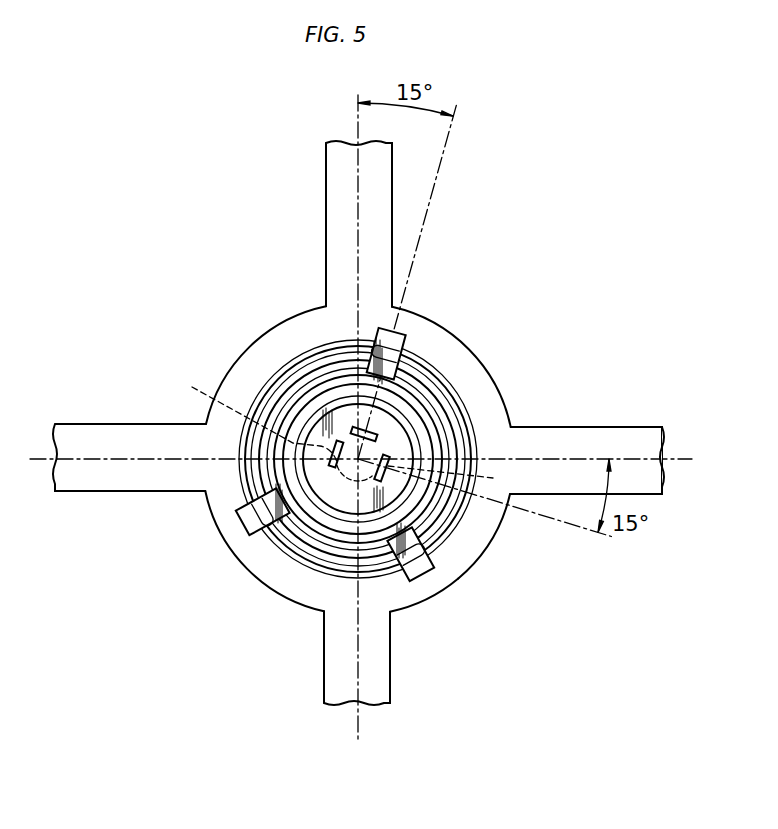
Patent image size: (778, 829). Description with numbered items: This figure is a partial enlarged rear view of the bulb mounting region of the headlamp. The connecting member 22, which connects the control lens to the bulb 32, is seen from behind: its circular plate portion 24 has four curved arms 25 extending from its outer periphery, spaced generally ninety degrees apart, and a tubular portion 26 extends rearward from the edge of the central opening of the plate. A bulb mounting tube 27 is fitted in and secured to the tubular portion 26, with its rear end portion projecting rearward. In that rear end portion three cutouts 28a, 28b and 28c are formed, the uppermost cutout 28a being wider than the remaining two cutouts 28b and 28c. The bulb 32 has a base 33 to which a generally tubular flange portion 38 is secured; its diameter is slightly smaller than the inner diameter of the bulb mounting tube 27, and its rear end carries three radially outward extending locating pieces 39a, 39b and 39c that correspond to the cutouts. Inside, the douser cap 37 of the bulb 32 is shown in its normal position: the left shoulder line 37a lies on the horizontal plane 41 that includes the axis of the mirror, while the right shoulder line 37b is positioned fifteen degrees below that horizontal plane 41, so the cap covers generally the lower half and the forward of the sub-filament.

The connecting member 22 is at (492, 547).
The circular plate portion 24 is at (412, 602).
The curved arms 25 is at (337, 188).
The tubular portion 26 is at (290, 365).
The bulb mounting tube 27 is at (433, 385).
The uppermost cutout 28a is at (407, 340).
The cutout 28b is at (237, 515).
The cutout 28c is at (432, 560).
The bulb 32 is at (470, 403).
The base 33 is at (317, 432).
The douser cap 37 is at (352, 481).
The left shoulder line 37a is at (246, 414).
The right shoulder line 37b is at (462, 479).
The flange portion 38 is at (323, 382).
The locating piece 39a is at (395, 348).
The locating piece 39b is at (256, 515).
The locating piece 39c is at (418, 565).
The horizontal plane 41 is at (628, 461).